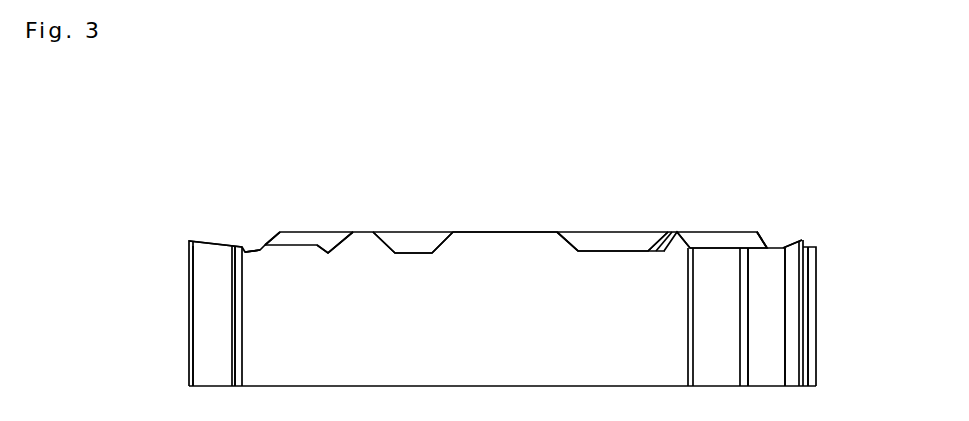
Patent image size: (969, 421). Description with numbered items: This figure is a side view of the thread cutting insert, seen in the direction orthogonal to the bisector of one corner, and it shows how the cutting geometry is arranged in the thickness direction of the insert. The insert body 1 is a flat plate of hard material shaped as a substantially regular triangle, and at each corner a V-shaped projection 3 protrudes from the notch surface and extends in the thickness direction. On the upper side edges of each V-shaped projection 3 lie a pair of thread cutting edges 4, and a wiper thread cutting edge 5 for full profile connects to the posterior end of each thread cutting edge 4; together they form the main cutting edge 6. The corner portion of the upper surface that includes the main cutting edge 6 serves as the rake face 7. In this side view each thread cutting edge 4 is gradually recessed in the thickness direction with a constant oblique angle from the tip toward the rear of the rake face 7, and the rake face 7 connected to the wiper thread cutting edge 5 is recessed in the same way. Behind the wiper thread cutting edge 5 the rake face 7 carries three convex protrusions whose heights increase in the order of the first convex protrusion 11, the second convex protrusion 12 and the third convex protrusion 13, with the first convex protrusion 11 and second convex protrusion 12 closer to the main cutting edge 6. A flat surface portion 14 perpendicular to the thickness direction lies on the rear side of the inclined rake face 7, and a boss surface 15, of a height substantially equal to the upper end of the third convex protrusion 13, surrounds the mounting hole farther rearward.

The insert body 1 is at (395, 184).
The V-shaped projection 3 is at (174, 322).
The thread cutting edge 4 is at (197, 240).
The wiper thread cutting edge for full profile 5 is at (237, 240).
The main cutting edge 6 is at (217, 172).
The rake face 7 is at (245, 198).
The first convex protrusion 11 is at (253, 240).
The second convex protrusion 12 is at (300, 245).
The third convex protrusion 13 is at (367, 232).
The flat surface portion 14 is at (417, 251).
The boss surface 15 is at (507, 232).